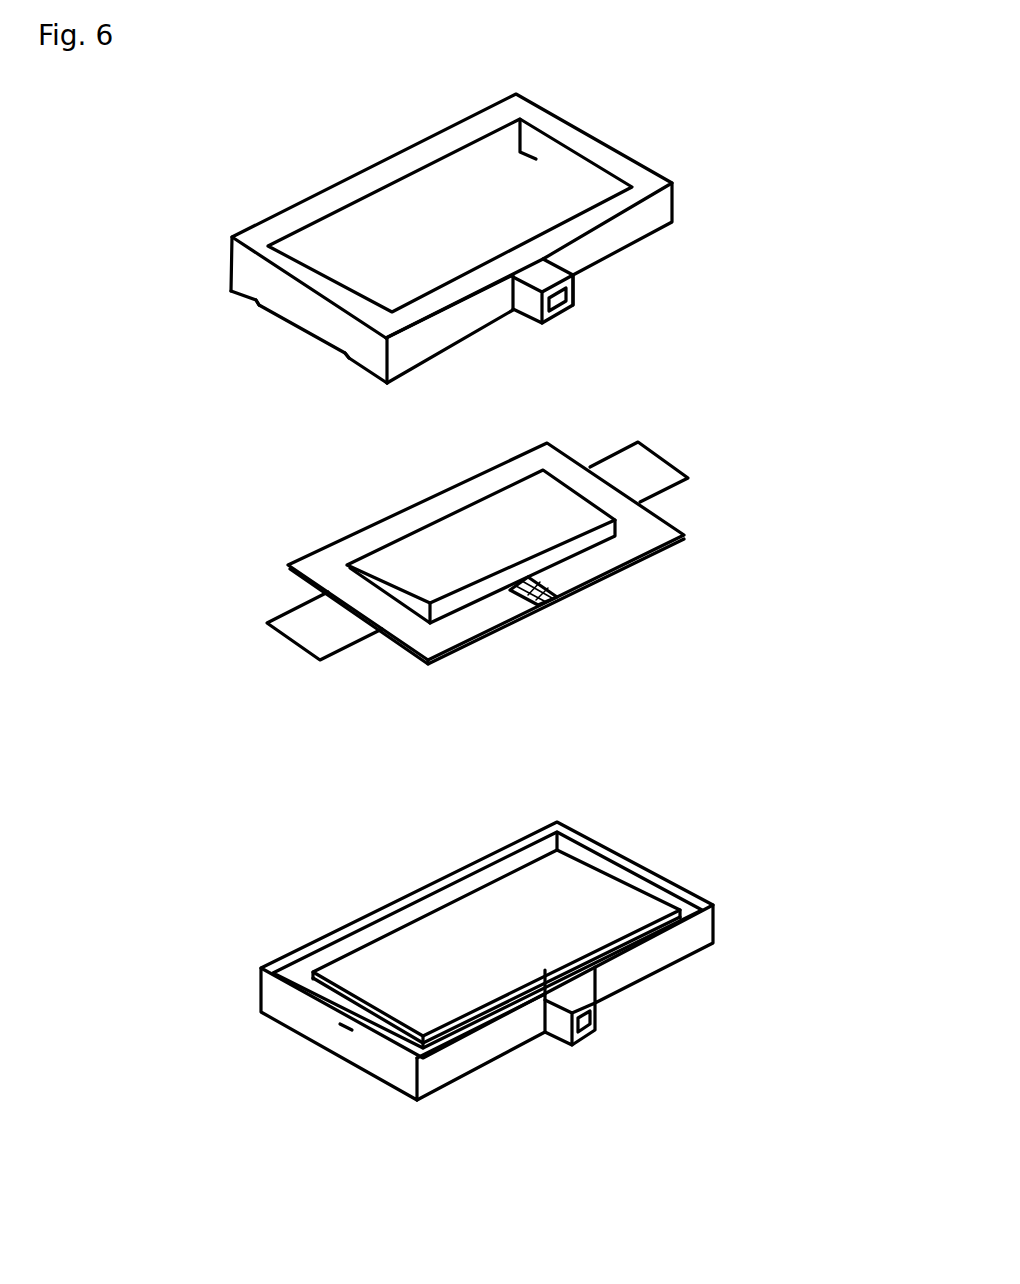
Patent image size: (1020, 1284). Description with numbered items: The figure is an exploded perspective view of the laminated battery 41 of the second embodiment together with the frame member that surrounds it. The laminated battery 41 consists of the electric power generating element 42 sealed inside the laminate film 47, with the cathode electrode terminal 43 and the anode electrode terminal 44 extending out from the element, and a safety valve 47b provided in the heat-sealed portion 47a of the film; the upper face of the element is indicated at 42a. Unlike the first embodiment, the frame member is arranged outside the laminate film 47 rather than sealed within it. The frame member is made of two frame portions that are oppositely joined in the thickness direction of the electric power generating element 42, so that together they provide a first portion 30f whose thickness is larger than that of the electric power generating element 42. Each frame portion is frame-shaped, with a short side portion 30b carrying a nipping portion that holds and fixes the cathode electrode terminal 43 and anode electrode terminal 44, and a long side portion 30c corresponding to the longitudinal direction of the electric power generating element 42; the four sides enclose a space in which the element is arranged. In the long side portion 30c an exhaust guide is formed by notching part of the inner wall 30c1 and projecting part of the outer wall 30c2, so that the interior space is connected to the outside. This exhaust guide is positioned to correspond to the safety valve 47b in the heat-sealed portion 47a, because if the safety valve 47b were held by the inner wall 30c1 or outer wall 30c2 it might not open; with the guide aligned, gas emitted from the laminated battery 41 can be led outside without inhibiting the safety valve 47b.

The short side portion 30b is at (363, 362).
The long side portion 30c is at (458, 327).
The inner wall 30c1 is at (463, 1012).
The outer wall 30c2 is at (510, 1032).
The first portion 30f is at (655, 217).
The laminated battery 41 is at (505, 552).
The electric power generating element 42 is at (490, 582).
The top surface of coil 42a is at (402, 558).
The cathode electrode terminal 43 is at (326, 646).
The anode electrode terminal 44 is at (690, 510).
The laminate film 47 is at (486, 551).
The heat-sealed portion 47a is at (445, 640).
The safety valve 47b is at (555, 600).